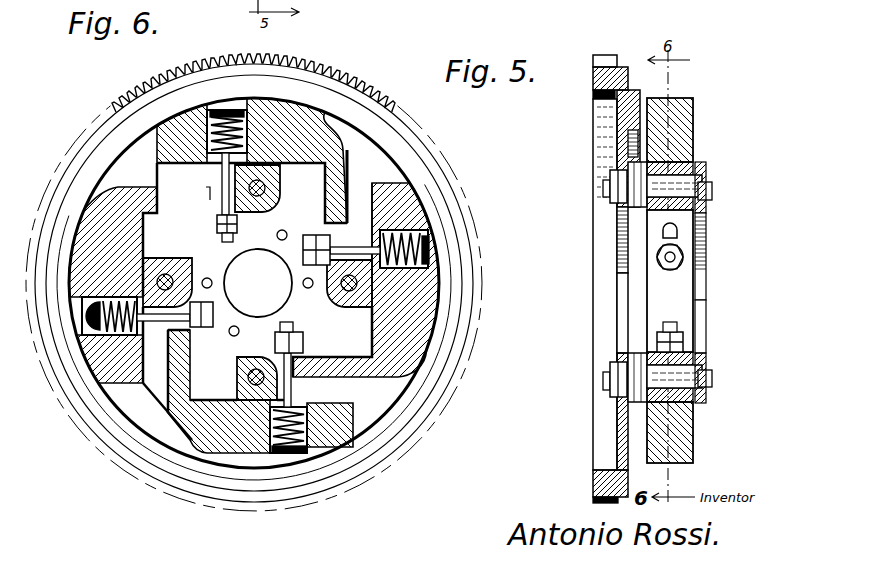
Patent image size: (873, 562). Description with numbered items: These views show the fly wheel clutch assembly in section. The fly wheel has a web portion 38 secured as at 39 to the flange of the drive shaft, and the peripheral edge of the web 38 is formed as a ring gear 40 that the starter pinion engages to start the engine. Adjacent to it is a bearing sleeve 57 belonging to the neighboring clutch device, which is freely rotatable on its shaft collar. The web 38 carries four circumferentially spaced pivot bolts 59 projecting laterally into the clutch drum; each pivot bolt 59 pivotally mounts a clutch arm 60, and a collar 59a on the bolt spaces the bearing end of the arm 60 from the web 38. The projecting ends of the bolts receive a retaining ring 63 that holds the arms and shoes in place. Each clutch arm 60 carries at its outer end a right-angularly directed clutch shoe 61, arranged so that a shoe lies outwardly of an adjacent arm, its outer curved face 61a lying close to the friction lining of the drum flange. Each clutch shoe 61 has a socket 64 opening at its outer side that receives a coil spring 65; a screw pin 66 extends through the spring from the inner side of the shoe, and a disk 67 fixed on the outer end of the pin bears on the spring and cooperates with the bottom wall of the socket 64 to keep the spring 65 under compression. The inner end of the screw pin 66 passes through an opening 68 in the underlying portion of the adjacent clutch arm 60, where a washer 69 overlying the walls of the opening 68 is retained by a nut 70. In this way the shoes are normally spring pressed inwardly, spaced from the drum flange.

In FIG. 6, the web portion 38 is at (308, 193).
In FIG. 5, the web portion 38 is at (620, 236).
In FIG. 6, the securing means 39 is at (287, 236).
In FIG. 6, the ring gear 40 is at (362, 95).
In FIG. 5, the ring gear 40 is at (609, 55).
In FIG. 6, the bearing sleeve 57 is at (90, 333).
In FIG. 6, the pivot bolts 59 is at (268, 194).
In FIG. 5, the pivot bolts 59 is at (682, 185).
In FIG. 5, the collar 59a is at (632, 172).
In FIG. 6, the clutch arm 60 is at (172, 206).
In FIG. 5, the clutch arm 60 is at (680, 305).
In FIG. 6, the clutch shoe 61 is at (300, 146).
In FIG. 5, the clutch shoe 61 is at (690, 103).
In FIG. 6, the outer curved faces 61a is at (292, 108).
In FIG. 5, the retaining ring 63 is at (694, 262).
In FIG. 6, the socket 64 is at (405, 279).
In FIG. 6, the coil spring 65 is at (420, 207).
In FIG. 6, the screw pin 66 is at (354, 250).
In FIG. 6, the disk 67 is at (430, 238).
In FIG. 6, the opening 68 is at (208, 200).
In FIG. 5, the opening 68 is at (675, 233).
In FIG. 6, the washer 69 is at (214, 227).
In FIG. 6, the nut 70 is at (236, 226).